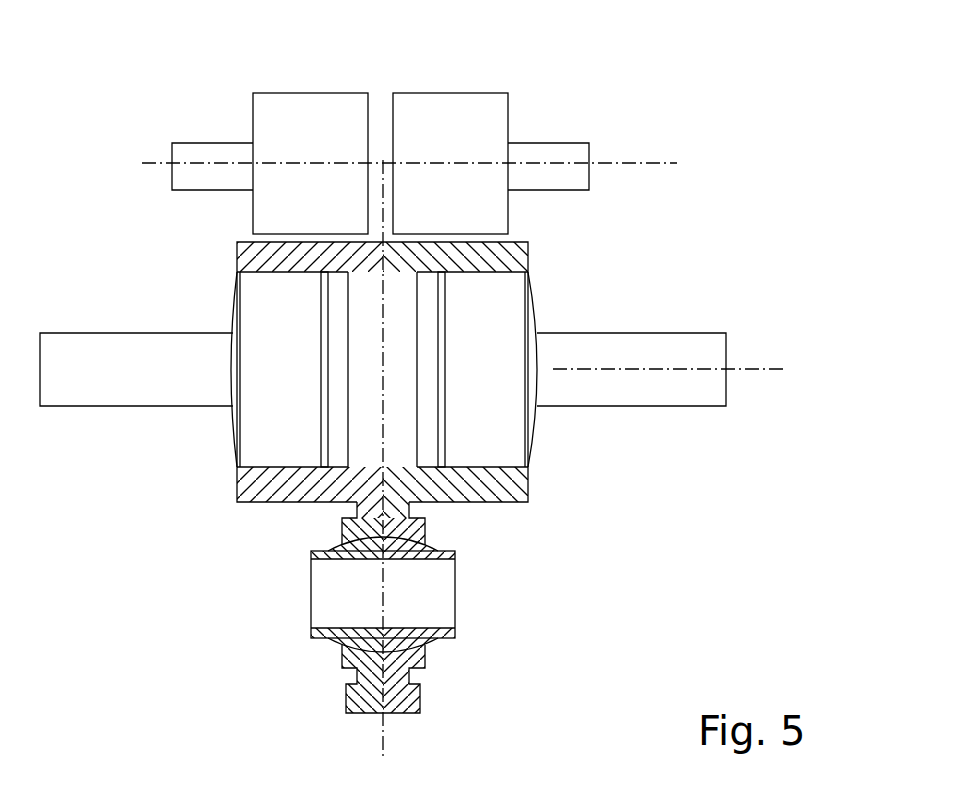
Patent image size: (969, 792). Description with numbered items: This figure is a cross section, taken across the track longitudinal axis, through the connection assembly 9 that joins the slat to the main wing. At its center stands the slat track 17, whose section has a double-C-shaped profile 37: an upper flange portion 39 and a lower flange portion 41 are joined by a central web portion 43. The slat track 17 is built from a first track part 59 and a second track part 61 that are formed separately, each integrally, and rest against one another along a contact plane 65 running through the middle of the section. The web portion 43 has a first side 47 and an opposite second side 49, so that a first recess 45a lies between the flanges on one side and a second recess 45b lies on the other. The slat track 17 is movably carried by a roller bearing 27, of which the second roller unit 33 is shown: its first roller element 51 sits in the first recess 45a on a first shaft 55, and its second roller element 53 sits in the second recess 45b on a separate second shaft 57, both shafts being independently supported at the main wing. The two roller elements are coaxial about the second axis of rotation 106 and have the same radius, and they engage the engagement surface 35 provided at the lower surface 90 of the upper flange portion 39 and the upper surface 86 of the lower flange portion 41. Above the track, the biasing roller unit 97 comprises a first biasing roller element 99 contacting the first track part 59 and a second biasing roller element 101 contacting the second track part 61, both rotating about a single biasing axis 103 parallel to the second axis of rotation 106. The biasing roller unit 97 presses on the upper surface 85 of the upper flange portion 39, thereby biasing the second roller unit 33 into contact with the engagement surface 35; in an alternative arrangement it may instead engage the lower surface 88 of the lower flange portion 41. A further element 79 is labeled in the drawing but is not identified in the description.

The connection assembly 9 is at (603, 178).
The slat track 17 is at (460, 257).
The roller bearing 27 is at (361, 394).
The second roller unit 33 is at (197, 218).
The engagement surface 35 is at (293, 270).
The double-C-shaped profile 37 is at (610, 535).
The upper flange portion 39 is at (313, 257).
The lower flange portion 41 is at (288, 503).
The web portion 43 is at (350, 390).
The first recess 45a is at (338, 302).
The second recess 45b is at (430, 293).
The first side 47 is at (345, 437).
The second side 49 is at (420, 437).
The first roller element 51 is at (292, 359).
The second roller element 53 is at (505, 360).
The first shaft 55 is at (75, 388).
The second shaft 57 is at (705, 388).
The first track part 59 is at (262, 257).
The second track part 61 is at (518, 253).
The contact plane 65 is at (386, 184).
The housing part 79 is at (233, 467).
The upper surface 85 is at (515, 242).
The upper surface 86 is at (283, 467).
The lower surface 88 is at (310, 503).
The lower surface 90 is at (265, 279).
The biasing roller unit 97 is at (313, 108).
The first biasing roller element 99 is at (310, 163).
The second biasing roller element 101 is at (450, 163).
The biasing axis 103 is at (663, 165).
The second axis of rotation 106 is at (768, 378).